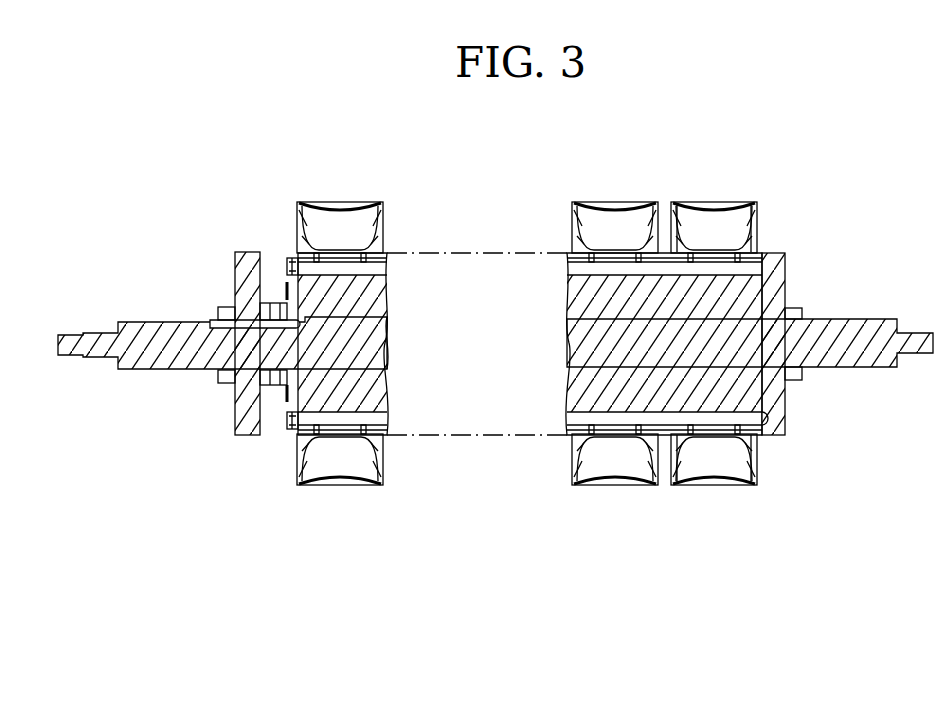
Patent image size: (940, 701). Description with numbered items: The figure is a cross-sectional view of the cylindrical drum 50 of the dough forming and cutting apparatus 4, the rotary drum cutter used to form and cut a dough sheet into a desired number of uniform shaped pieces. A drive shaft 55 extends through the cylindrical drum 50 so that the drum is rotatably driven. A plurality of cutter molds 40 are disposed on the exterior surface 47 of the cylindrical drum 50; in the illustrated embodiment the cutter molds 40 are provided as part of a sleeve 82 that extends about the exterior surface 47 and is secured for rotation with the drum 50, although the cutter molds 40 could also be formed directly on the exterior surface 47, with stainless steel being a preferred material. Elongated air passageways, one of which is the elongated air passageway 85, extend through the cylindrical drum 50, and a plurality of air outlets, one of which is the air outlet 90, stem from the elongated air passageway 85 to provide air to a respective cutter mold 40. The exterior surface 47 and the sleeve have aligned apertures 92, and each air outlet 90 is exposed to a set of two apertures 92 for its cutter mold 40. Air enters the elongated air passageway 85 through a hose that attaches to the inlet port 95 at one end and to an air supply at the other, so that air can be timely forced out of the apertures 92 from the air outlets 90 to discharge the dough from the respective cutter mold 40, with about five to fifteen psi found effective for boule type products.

The dough forming and cutting apparatus 4 is at (275, 174).
The cutter mold 40 is at (710, 205).
The exterior surface 47 is at (291, 258).
The cylindrical drum 50 is at (778, 244).
The drive shaft 55 is at (838, 318).
The sleeve 82 is at (758, 438).
The elongated air passageway 85 is at (787, 252).
The air outlet 90 is at (738, 247).
The aperture 92 is at (694, 245).
The inlet port 95 is at (286, 260).